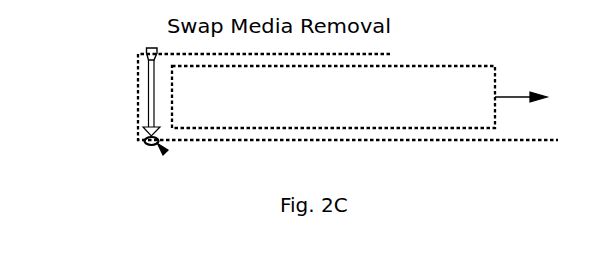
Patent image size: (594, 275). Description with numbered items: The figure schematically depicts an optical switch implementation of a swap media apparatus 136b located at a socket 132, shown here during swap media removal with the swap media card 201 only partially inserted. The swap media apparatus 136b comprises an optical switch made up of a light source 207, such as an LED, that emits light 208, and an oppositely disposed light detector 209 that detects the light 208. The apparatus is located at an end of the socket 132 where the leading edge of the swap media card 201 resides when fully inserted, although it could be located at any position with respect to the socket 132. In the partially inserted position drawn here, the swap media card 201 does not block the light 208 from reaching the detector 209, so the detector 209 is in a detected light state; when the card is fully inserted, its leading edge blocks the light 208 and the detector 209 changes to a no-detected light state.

The socket 132 is at (373, 53).
The swap media card 201 is at (352, 108).
The light source 207 is at (146, 51).
The light 208 is at (148, 97).
The light detector 209 is at (143, 139).
The swap media apparatus 136b is at (163, 151).